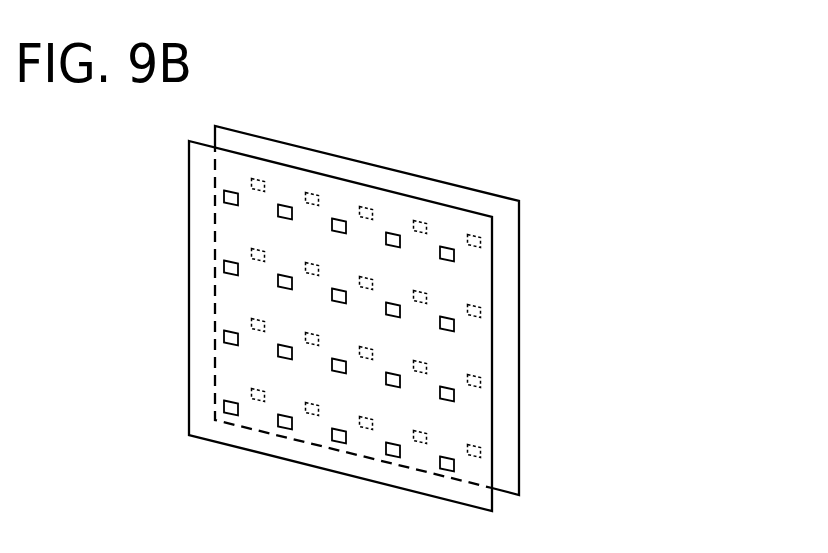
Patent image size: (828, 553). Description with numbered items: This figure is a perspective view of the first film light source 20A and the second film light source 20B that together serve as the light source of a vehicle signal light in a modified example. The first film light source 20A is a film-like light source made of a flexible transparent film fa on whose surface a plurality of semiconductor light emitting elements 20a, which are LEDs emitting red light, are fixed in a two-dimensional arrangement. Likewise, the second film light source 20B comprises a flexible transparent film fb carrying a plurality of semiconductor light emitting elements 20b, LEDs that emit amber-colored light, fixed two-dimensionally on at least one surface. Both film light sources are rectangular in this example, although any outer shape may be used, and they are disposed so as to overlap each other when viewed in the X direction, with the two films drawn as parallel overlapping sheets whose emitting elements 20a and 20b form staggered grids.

The first film light source 20A is at (292, 165).
The second film light source 20B is at (357, 160).
The transparent film fa is at (188, 213).
The transparent film fb is at (483, 191).
The semiconductor light emitting elements 20a is at (224, 267).
The semiconductor light emitting elements 20b is at (481, 240).